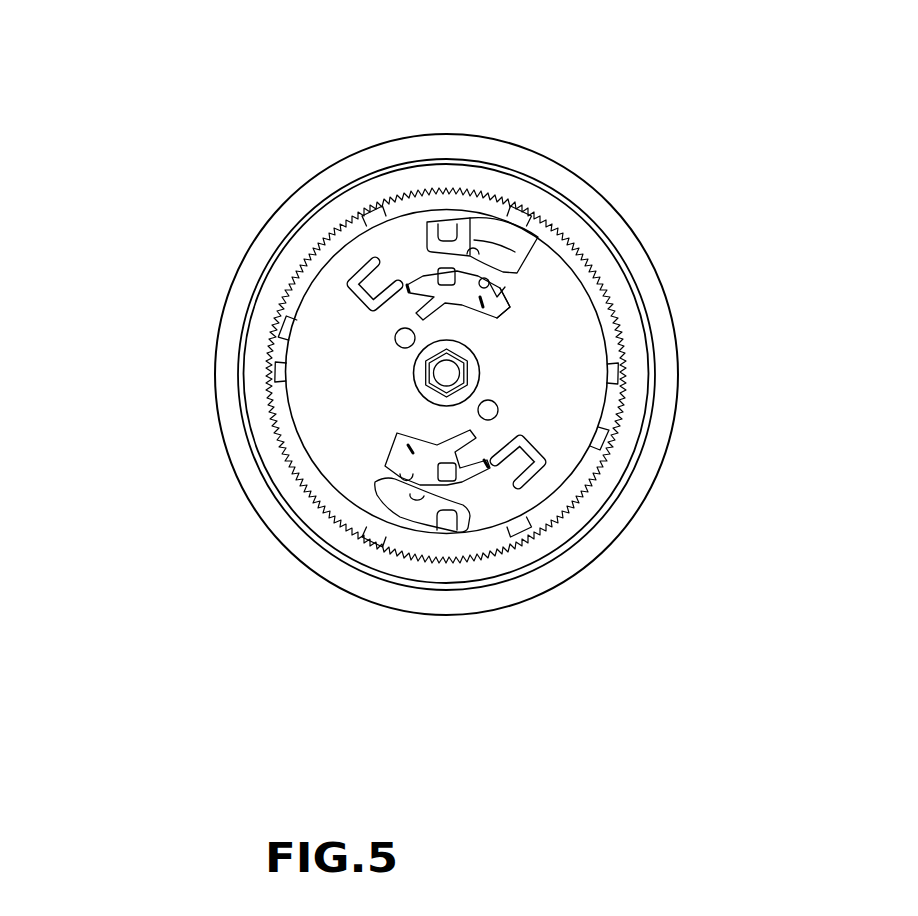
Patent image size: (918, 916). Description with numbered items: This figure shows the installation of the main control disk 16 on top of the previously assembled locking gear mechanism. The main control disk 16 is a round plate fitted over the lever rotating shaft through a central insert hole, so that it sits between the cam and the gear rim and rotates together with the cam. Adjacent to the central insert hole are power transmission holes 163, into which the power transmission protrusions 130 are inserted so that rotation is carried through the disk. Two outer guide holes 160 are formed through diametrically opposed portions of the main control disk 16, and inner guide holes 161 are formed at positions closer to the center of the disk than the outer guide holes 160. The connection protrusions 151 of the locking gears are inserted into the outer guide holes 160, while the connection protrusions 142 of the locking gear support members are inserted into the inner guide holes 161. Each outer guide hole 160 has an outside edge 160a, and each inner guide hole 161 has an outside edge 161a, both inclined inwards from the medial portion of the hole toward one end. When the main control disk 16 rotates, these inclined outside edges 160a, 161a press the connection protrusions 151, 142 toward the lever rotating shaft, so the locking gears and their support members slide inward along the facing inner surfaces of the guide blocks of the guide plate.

The main control disk 16 is at (325, 368).
The power transmission protrusions 130 is at (497, 410).
The connection protrusions of the locking gear support members 142 is at (473, 290).
The connection protrusions of the locking gears 151 is at (443, 227).
The outer guide holes 160 is at (542, 150).
The outside edge of outer guide hole 160a is at (500, 240).
The inner guide holes 161 is at (480, 175).
The outside edge of inner guide hole 161a is at (498, 293).
The power transmission holes 163 is at (497, 400).